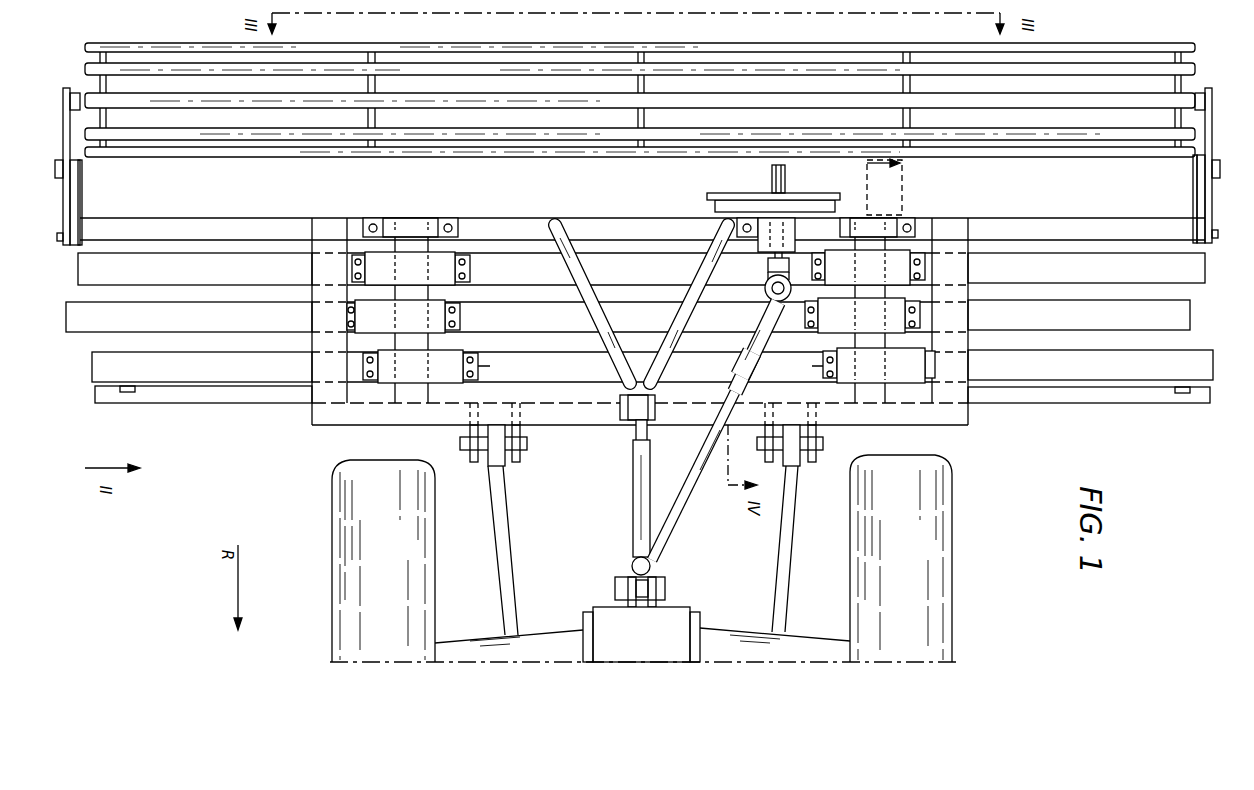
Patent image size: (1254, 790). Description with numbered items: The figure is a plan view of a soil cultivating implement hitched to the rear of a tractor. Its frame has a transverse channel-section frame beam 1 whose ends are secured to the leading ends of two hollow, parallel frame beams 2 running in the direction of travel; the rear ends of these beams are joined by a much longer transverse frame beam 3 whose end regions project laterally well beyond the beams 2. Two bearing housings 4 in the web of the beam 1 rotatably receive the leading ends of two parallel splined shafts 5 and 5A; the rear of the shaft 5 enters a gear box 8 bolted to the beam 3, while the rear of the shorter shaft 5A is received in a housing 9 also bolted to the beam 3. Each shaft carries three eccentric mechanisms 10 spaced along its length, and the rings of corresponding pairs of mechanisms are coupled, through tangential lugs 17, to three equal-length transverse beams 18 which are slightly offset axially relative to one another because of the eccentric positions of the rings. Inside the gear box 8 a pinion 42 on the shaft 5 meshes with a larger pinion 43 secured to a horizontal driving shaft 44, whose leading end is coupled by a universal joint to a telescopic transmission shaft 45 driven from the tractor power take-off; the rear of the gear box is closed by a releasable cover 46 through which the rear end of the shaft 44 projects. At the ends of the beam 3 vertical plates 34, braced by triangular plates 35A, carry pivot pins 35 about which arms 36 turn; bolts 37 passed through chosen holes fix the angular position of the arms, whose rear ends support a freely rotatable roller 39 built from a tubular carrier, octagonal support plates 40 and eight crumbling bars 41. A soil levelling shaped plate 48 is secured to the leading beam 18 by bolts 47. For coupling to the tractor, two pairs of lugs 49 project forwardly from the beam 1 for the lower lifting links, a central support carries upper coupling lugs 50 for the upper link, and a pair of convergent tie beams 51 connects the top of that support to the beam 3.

The frame beam 1 is at (560, 425).
The frame beams 2 is at (312, 318).
The frame beam 3 is at (495, 218).
The bearing housing 4 is at (90, 325).
The shaft 5 is at (879, 365).
The shaft 5A is at (420, 366).
The gear box 8 is at (742, 193).
The housing 9 is at (416, 218).
The eccentric mechanisms 10 is at (452, 284).
The lugs 17 is at (480, 368).
The beams 18 is at (90, 332).
The plates 34 is at (78, 183).
The pivot pins 35 is at (78, 262).
The triangular plate 35A is at (122, 208).
The arms 36 is at (67, 86).
The bolts 37 is at (80, 162).
The roller 39 is at (250, 150).
The support plates 40 is at (371, 157).
The crumbling bars 41 is at (1038, 134).
The pinion 42 is at (910, 212).
The pinion 43 is at (708, 202).
The driving shaft 44 is at (768, 265).
The telescopic transmission shaft 45 is at (692, 498).
The cover 46 is at (786, 178).
The bolts 47 is at (130, 392).
The shaped plate 48 is at (225, 404).
The lugs 49 is at (500, 462).
The coupling lugs 50 is at (634, 445).
The tie beams 51 is at (598, 305).